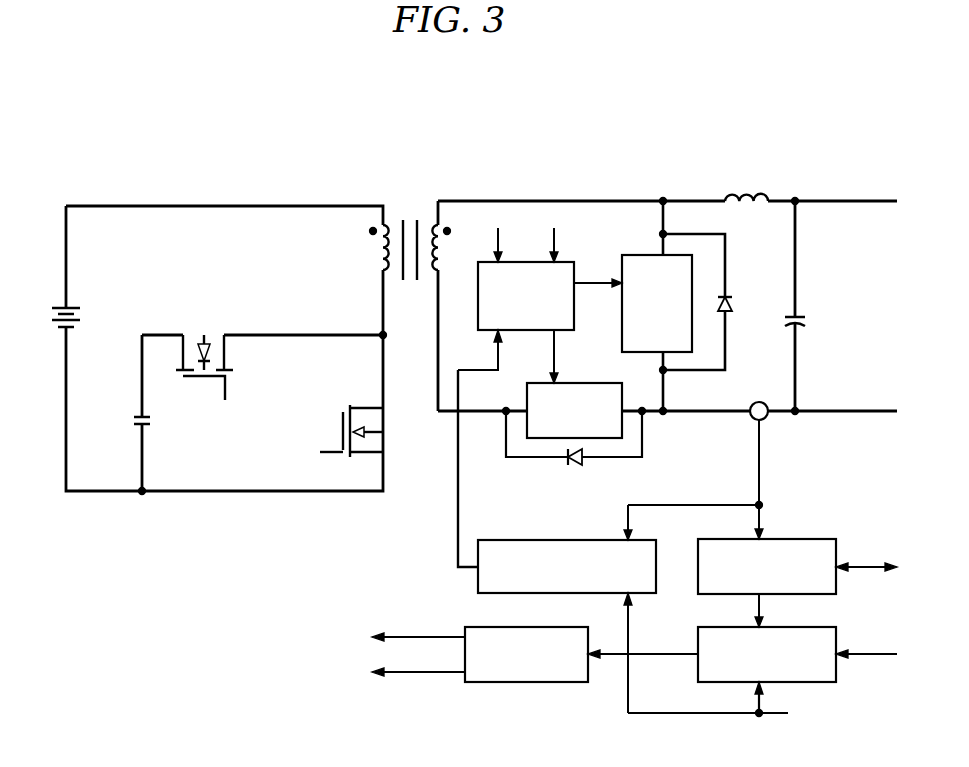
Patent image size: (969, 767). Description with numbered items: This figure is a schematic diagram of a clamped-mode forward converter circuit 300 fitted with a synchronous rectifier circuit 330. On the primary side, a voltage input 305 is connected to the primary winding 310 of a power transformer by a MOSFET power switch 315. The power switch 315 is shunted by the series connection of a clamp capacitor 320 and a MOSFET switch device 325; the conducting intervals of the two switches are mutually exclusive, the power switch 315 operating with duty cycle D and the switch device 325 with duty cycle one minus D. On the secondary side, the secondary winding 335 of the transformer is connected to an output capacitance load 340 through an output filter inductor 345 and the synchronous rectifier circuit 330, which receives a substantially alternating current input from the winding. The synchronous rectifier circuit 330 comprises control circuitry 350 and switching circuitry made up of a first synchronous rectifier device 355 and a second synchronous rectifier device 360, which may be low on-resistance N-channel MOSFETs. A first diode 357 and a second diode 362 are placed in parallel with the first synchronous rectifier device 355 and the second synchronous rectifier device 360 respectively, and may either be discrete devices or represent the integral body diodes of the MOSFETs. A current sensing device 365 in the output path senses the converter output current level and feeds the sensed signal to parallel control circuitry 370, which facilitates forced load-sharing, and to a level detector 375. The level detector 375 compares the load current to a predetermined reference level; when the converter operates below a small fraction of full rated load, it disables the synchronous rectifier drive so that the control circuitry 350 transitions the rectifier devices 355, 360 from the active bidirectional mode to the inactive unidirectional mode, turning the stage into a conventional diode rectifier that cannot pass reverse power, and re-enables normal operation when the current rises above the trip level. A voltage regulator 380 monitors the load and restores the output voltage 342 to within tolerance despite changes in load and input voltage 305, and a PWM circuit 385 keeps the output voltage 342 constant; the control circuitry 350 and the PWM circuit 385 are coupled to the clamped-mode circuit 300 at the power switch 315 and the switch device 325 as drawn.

The clamped-mode forward converter circuit 300 is at (214, 247).
The voltage input Vin 305 is at (84, 316).
The primary winding 310 is at (375, 256).
The MOSFET power switch Q1 315 is at (362, 398).
The clamp capacitor 320 is at (137, 425).
The MOSFET switch device Q2 325 is at (217, 321).
The synchronous rectifier circuit 330 is at (604, 362).
The secondary winding 335 is at (457, 306).
The output capacitance load Cout 340 is at (812, 313).
The output voltage Vout 342 is at (850, 165).
The output filter inductor Lout 345 is at (724, 165).
The control circuitry 350 is at (568, 295).
The synchronous rectifier device SR1 355 is at (674, 330).
The diode D1 357 is at (738, 321).
The synchronous rectifier device SR2 360 is at (593, 435).
The diode D2 362 is at (595, 483).
The current sensing device 365 is at (752, 418).
The parallel control circuitry 370 is at (800, 538).
The level detector 375 is at (540, 536).
The voltage regulator 380 is at (820, 683).
The PWM circuit 385 is at (528, 683).